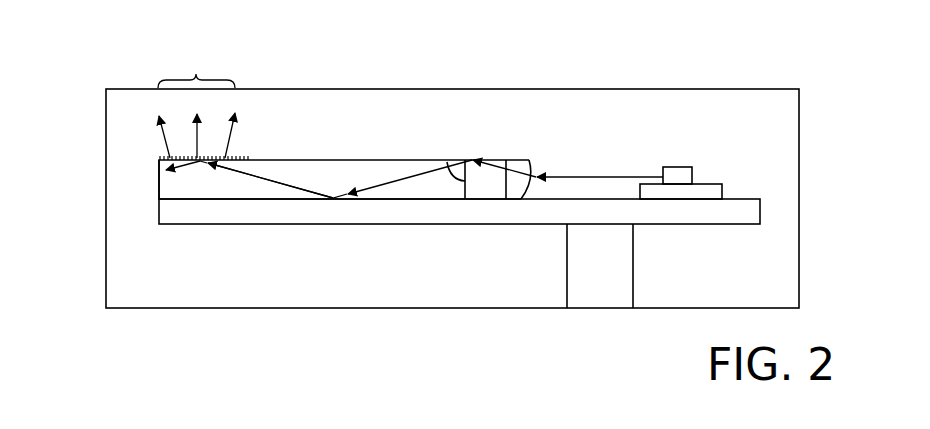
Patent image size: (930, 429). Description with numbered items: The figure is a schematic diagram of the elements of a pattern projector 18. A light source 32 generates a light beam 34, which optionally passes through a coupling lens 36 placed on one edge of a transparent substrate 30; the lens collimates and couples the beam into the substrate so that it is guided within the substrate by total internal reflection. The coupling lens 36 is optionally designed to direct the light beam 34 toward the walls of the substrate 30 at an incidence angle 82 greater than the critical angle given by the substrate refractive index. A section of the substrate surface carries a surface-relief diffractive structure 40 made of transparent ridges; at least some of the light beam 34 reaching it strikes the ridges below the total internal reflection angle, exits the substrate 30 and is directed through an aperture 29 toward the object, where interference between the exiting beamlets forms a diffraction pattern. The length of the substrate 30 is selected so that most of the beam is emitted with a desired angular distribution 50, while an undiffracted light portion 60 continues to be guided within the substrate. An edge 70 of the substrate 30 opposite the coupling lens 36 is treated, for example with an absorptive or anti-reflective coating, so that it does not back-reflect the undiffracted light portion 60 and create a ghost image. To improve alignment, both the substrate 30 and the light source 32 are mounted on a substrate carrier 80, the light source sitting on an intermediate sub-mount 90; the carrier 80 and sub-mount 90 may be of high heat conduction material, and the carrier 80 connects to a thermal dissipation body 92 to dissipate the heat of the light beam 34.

The pattern projector 18 is at (799, 180).
The aperture 29 is at (196, 63).
The transparent substrate 30 is at (348, 168).
The light source 32 is at (677, 167).
The light beam 34 is at (594, 177).
The coupling lens 36 is at (521, 160).
The surface-relief diffractive structure 40 is at (248, 156).
The angular distribution 50 is at (196, 114).
The undiffracted light portion 60 is at (168, 163).
The edge 70 is at (158, 189).
The substrate carrier 80 is at (466, 216).
The incidence angle 82 is at (446, 170).
The sub-mount 90 is at (706, 184).
The thermal dissipation body 92 is at (608, 308).